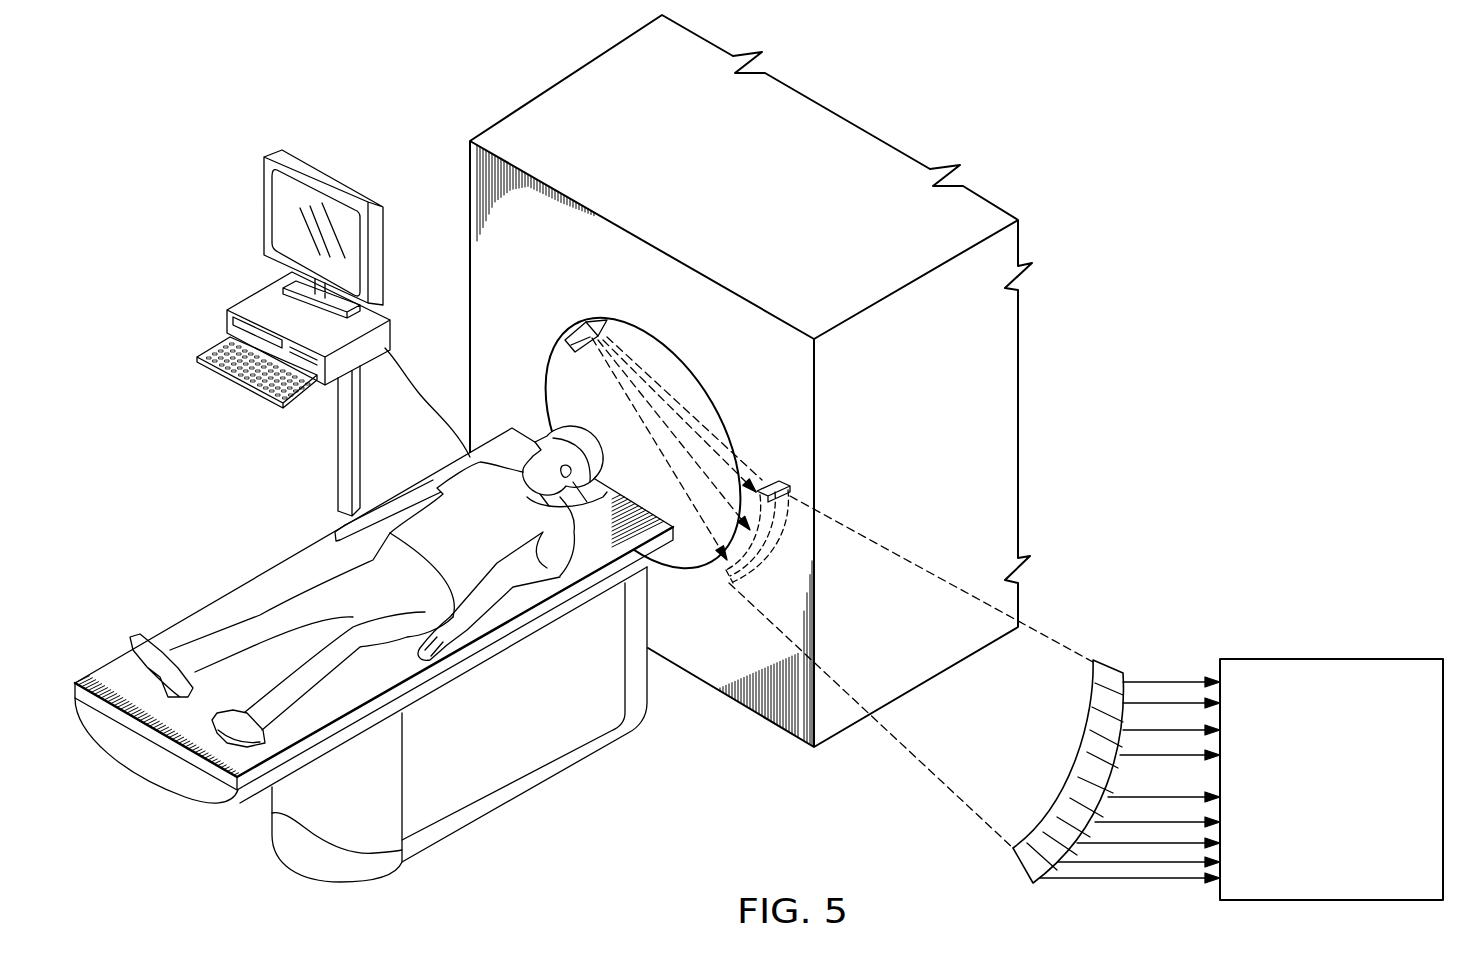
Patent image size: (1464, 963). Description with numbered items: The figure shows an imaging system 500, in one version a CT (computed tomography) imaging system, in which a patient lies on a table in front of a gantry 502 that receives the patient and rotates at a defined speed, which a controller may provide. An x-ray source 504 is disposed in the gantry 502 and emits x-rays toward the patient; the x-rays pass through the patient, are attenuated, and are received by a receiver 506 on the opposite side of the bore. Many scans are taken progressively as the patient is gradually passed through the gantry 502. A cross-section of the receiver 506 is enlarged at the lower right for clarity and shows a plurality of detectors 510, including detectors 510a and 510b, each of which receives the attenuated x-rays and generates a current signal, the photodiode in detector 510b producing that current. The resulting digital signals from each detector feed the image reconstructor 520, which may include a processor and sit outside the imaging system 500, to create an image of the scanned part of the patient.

The imaging system 500 is at (1183, 96).
The gantry 502 is at (704, 385).
The x-ray source 504 is at (575, 325).
The receiver 506 is at (784, 530).
The plurality of detectors 510 is at (1108, 664).
The detector 510a is at (1100, 675).
The detector 510b is at (1090, 759).
The image reconstructor 520 is at (1311, 825).